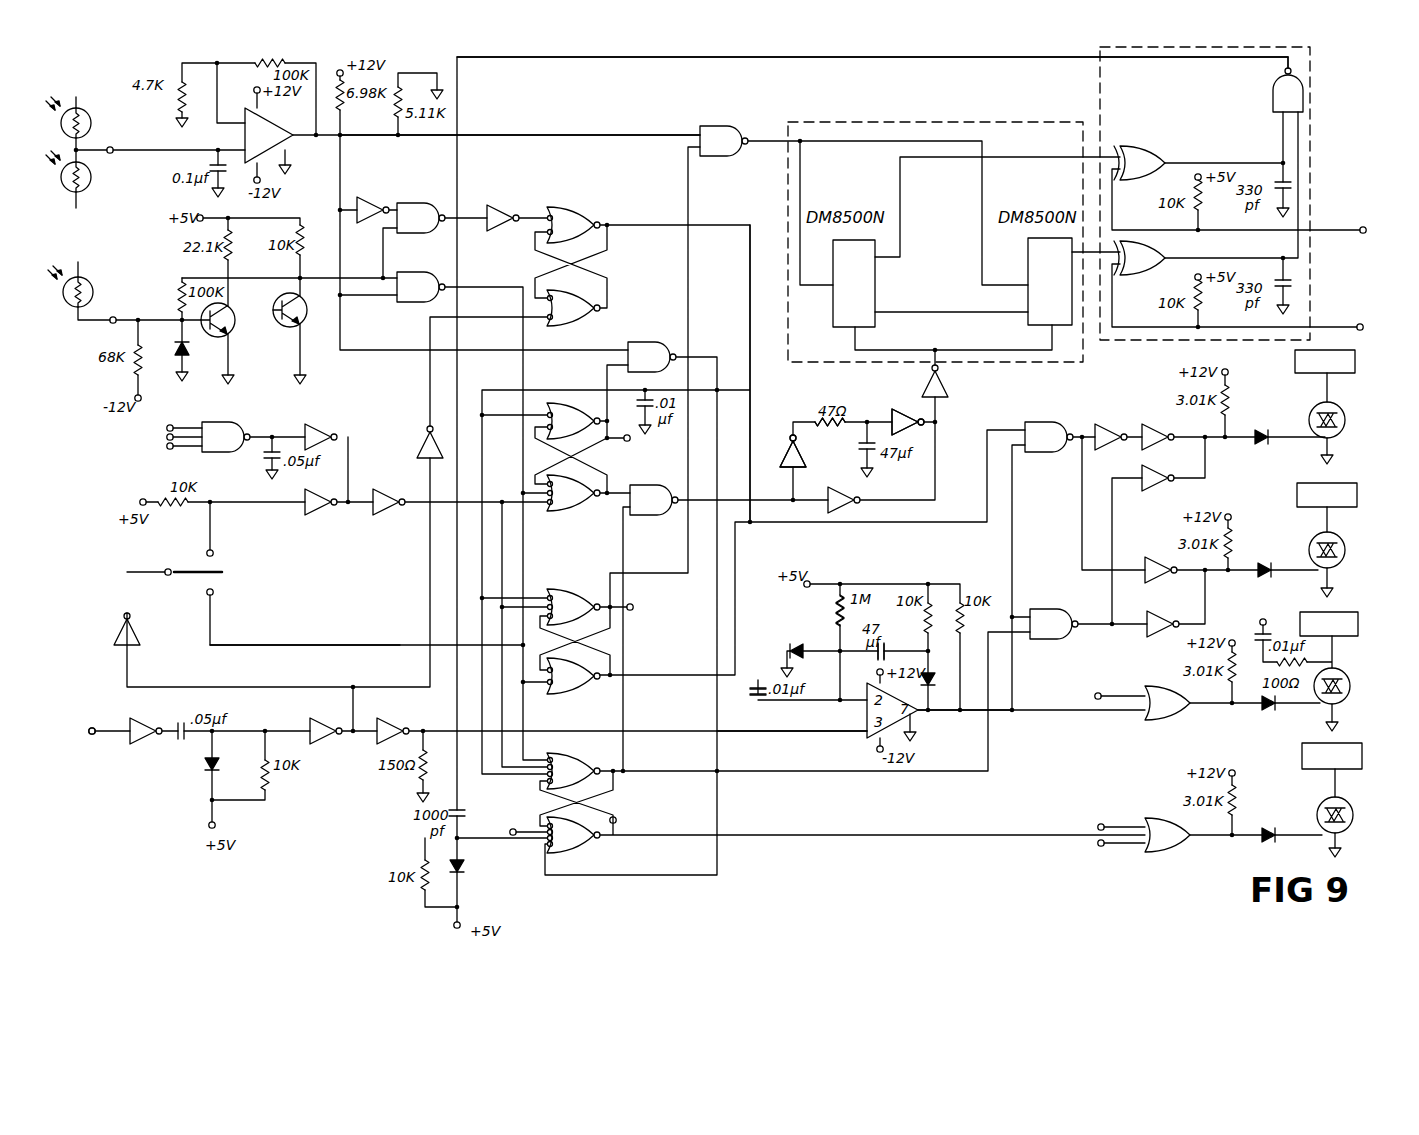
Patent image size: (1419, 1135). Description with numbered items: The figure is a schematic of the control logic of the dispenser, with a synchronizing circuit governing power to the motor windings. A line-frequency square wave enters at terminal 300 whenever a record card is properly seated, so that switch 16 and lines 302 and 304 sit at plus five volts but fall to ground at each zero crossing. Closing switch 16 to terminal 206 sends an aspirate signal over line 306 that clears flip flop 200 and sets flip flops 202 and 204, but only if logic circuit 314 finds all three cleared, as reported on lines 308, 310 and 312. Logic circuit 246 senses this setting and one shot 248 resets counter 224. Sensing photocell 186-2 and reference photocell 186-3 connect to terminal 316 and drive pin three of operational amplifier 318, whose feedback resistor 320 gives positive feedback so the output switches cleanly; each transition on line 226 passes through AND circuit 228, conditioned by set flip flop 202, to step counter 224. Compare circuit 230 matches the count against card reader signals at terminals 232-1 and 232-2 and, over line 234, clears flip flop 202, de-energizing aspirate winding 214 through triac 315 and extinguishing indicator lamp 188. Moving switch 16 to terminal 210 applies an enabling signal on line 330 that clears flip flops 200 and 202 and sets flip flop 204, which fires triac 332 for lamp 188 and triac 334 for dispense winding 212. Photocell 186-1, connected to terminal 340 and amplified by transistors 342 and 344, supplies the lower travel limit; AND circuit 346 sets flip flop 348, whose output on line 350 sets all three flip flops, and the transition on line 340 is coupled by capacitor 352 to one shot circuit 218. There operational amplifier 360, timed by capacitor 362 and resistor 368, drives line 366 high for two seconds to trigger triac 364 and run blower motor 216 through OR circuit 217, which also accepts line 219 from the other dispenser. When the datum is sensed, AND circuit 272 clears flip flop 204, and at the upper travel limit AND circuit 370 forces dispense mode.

The photocell 186-1 is at (91, 283).
The sensing photocell 186-2 is at (88, 116).
The reference photocell 186-3 is at (88, 188).
The terminal 316 is at (114, 153).
The resistor 320 is at (262, 66).
The operational amplifier 318 is at (278, 138).
The terminal 340 is at (117, 315).
The transistor 342 is at (233, 338).
The transistor 344 is at (306, 330).
The line 308 is at (172, 424).
The line 310 is at (167, 437).
The line 312 is at (174, 448).
The logic circuit 314 is at (246, 423).
The terminal 206 is at (216, 552).
The terminal 210 is at (216, 592).
The switch 16 is at (187, 578).
The line 330 is at (337, 648).
The terminal 300 is at (91, 736).
The line 302 is at (428, 383).
The line 306 is at (412, 508).
The AND circuit 346 is at (418, 203).
The AND circuit 370 is at (418, 303).
The flip flop 348 is at (598, 212).
The AND circuit 272 is at (645, 340).
The line 226 is at (543, 134).
The AND circuit 228 is at (728, 124).
The counter 224 is at (900, 120).
The line 234 is at (1068, 60).
The compare circuit 230 is at (1312, 121).
The terminal 232-1 is at (1360, 227).
The terminal 232-2 is at (1358, 325).
The line 350 is at (718, 222).
The flip flop 200 is at (607, 455).
The logic circuit 246 is at (652, 514).
The flip flop 202 is at (627, 641).
The flip flop 204 is at (618, 800).
The one shot 248 is at (793, 410).
The one shot circuit 218 is at (862, 573).
The resistor 368 is at (838, 620).
The capacitor 362 is at (884, 646).
The operational amplifier 360 is at (862, 738).
The capacitor 352 is at (755, 695).
The line 304 is at (777, 733).
The line 366 is at (1003, 714).
The line 219 is at (1125, 694).
The OR circuit 217 is at (1150, 722).
The aspirate winding 214 is at (1335, 375).
The triac 315 is at (1333, 440).
The dispense winding 212 is at (1338, 508).
The triac 334 is at (1335, 573).
The blower motor 216 is at (1347, 637).
The triac 364 is at (1344, 704).
The indicator lamp 188 is at (1347, 769).
The triac 332 is at (1344, 836).